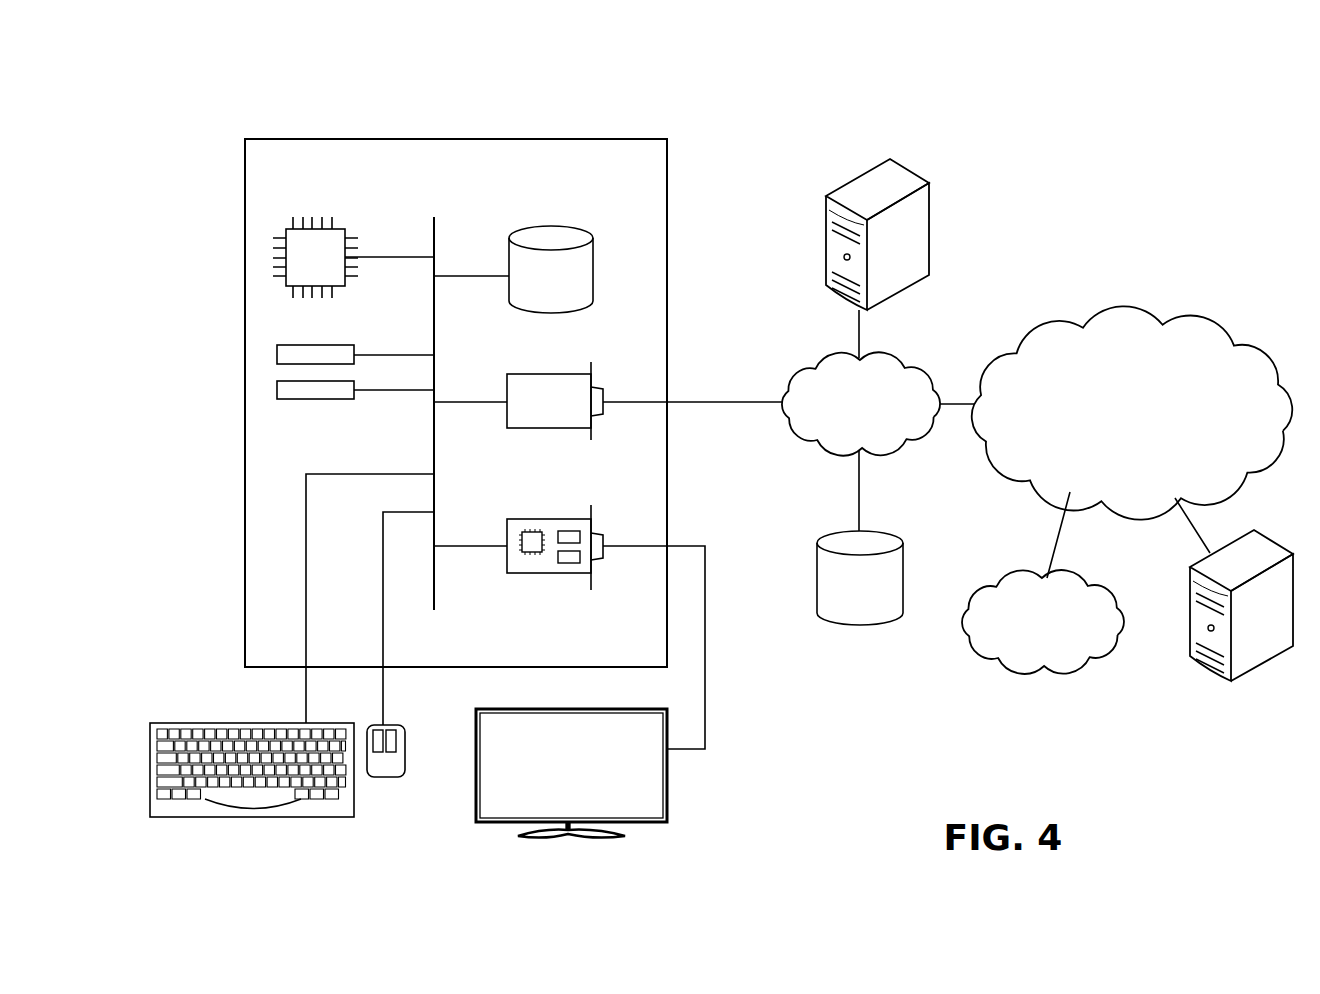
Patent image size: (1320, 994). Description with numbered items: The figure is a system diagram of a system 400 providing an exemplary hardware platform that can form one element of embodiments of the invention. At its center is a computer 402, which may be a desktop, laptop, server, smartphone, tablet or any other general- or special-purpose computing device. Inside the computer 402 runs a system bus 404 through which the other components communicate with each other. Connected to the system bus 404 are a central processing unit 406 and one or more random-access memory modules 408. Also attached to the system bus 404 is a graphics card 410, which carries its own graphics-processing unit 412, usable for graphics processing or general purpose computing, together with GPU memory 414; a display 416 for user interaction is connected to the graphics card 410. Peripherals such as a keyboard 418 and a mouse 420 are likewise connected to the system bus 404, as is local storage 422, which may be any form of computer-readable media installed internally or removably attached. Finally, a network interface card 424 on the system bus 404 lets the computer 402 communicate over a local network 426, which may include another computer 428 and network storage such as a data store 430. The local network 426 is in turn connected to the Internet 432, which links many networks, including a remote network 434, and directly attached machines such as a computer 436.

The system 400 is at (318, 103).
The computer 402 is at (620, 139).
The system bus 404 is at (434, 227).
The central processing unit 406 is at (343, 229).
The random-access memory modules 408 is at (354, 386).
The graphics card 410 is at (546, 547).
The graphics-processing unit 412 is at (530, 552).
The GPU memory 414 is at (566, 563).
The display 416 is at (667, 803).
The keyboard 418 is at (253, 817).
The mouse 420 is at (382, 777).
The local storage 422 is at (593, 257).
The network interface card 424 is at (507, 385).
The local network 426 is at (913, 361).
The computer 428 is at (913, 170).
The data store 430 is at (892, 532).
The Internet 432 is at (1175, 322).
The remote network 434 is at (1098, 578).
The computer 436 is at (1272, 540).